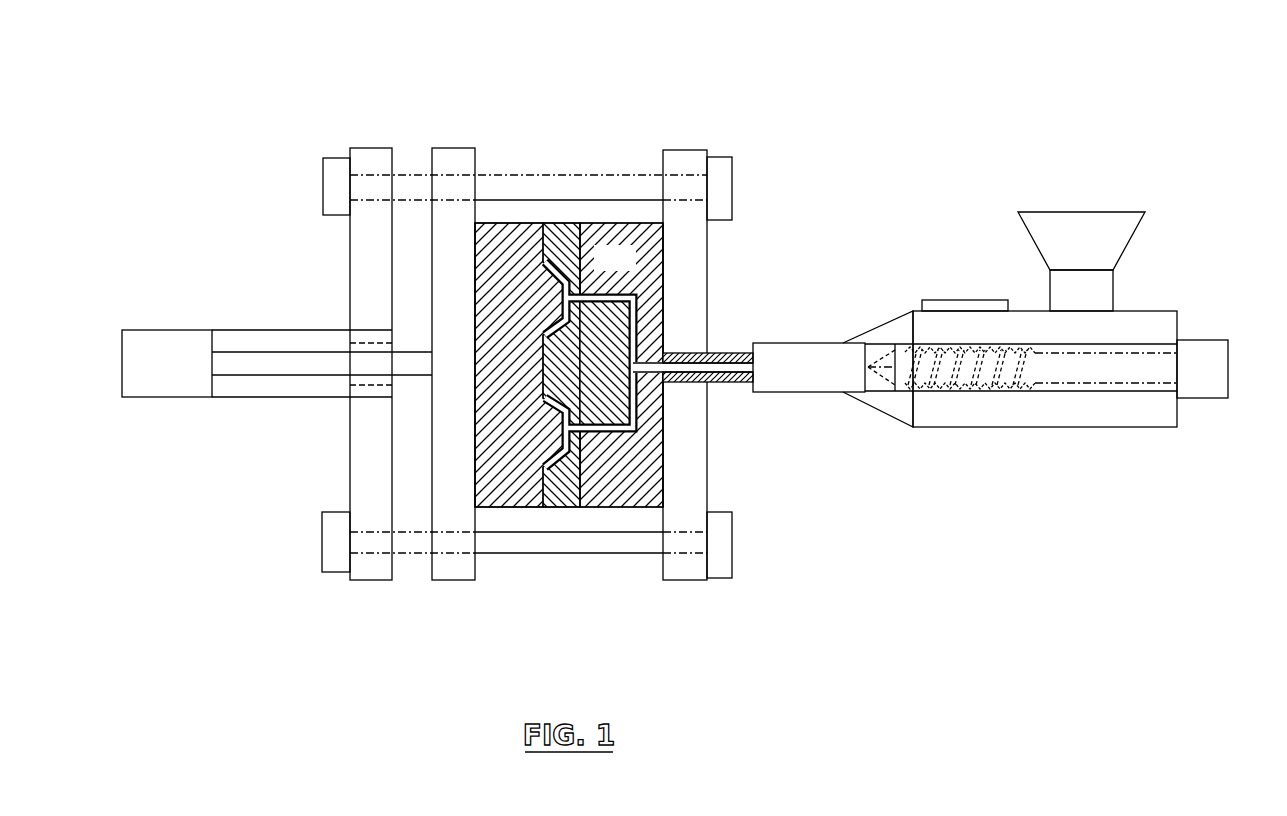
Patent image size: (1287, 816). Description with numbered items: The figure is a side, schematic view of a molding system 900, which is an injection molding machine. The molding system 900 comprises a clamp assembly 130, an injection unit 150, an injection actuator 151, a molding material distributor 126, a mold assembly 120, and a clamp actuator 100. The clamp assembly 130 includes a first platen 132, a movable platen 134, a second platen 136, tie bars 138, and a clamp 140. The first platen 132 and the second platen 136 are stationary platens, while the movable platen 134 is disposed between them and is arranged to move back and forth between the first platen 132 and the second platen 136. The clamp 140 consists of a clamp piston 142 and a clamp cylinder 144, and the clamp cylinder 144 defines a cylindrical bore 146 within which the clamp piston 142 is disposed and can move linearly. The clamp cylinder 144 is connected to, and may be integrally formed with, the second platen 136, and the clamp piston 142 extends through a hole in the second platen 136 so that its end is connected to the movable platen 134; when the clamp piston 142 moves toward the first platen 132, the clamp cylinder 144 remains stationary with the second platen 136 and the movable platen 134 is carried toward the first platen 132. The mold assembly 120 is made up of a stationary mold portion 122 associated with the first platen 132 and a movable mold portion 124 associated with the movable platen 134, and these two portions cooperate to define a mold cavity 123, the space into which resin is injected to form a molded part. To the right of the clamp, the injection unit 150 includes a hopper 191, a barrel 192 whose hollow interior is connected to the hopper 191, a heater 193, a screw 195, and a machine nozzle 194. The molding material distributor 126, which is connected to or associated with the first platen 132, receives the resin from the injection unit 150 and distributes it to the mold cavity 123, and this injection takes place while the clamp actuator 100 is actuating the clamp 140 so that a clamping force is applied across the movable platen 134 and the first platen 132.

The molding system 900 is at (924, 88).
The clamp actuator 100 is at (150, 410).
The mold assembly 120 is at (548, 136).
The stationary mold portion 122 is at (562, 232).
The mold cavity 123 is at (553, 402).
The movable mold portion 124 is at (512, 235).
The molding material distributor 126 is at (597, 269).
The clamp assembly 130 is at (690, 160).
The first platen 132 is at (682, 580).
The movable platen 134 is at (450, 580).
The second platen 136 is at (370, 580).
The tie bars 138 is at (412, 185).
The clamp 140 is at (210, 280).
The clamp piston 142 is at (262, 377).
The clamp cylinder 144 is at (372, 338).
The cylindrical bore 146 is at (367, 383).
The injection unit 150 is at (1197, 309).
The injection actuator 151 is at (1191, 420).
The hopper 191 is at (1085, 238).
The barrel 192 is at (1020, 413).
The heater 193 is at (967, 303).
The machine nozzle 194 is at (768, 347).
The screw 195 is at (957, 375).